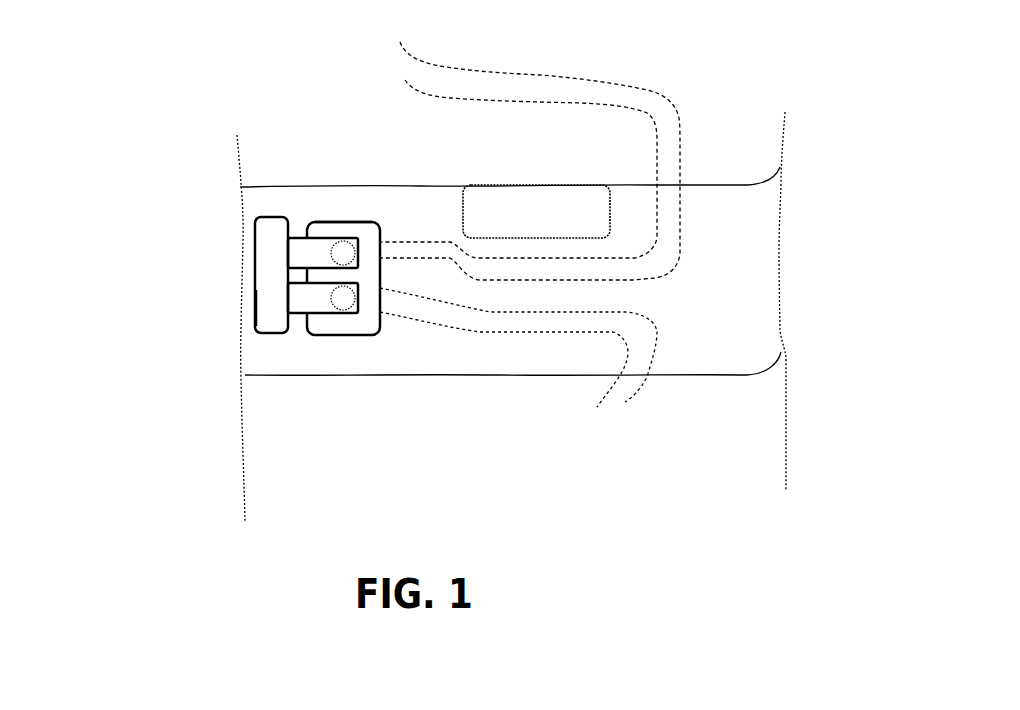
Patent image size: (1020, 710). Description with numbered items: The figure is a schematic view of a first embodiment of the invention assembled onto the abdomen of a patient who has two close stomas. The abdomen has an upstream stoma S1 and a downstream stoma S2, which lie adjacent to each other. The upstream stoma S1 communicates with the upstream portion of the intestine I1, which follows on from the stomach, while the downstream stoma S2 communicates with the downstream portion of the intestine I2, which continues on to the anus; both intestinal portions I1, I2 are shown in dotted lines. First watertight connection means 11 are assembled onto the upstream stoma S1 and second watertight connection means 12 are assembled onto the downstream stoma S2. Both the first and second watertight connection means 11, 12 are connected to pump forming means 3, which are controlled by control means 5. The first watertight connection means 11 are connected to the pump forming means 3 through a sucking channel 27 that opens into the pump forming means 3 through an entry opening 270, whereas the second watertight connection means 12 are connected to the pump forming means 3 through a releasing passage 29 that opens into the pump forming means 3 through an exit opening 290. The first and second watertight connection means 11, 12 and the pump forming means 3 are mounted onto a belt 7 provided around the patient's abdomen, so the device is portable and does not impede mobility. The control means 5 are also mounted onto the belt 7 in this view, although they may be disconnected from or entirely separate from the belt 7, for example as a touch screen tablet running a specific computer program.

The pump forming means 3 is at (260, 301).
The control means 5 is at (557, 226).
The belt 7 is at (755, 228).
The first watertight connection means 11 is at (325, 227).
The second watertight connection means 12 is at (315, 271).
The sucking channel 27 is at (220, 186).
The releasing passage 29 is at (260, 401).
The entry opening 270 is at (285, 249).
The exit opening 290 is at (317, 303).
The upstream stoma S1 is at (344, 250).
The downstream stoma S2 is at (352, 300).
The upstream portion of the intestine I1 is at (663, 112).
The downstream portion of the intestine I2 is at (642, 345).